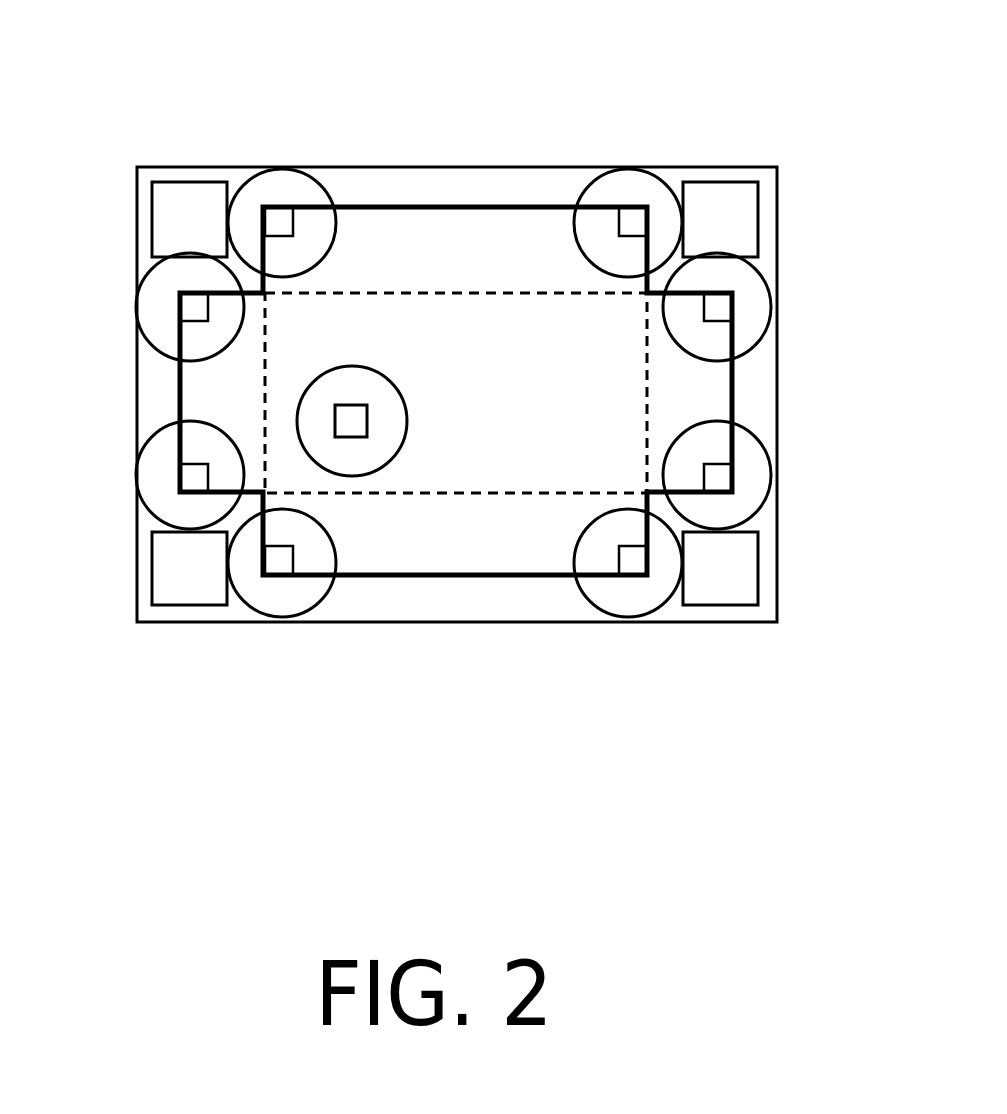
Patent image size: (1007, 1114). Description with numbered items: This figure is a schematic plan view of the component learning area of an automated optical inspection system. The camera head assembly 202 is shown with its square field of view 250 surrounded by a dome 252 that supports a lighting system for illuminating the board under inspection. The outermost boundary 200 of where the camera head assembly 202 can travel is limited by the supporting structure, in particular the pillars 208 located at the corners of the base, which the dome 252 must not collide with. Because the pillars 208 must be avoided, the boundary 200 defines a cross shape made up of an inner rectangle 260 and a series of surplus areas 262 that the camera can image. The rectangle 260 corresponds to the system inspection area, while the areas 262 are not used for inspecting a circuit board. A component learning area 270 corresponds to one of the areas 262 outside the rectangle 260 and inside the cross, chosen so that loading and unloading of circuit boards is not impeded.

The outermost boundary 200 is at (512, 203).
The camera head assembly 202 is at (448, 390).
The pillars 208 is at (197, 200).
The square field of view 250 is at (358, 417).
The dome 252 is at (405, 449).
The inner rectangle 260 is at (518, 498).
The areas 262 is at (390, 228).
The component learning area 270 is at (677, 410).